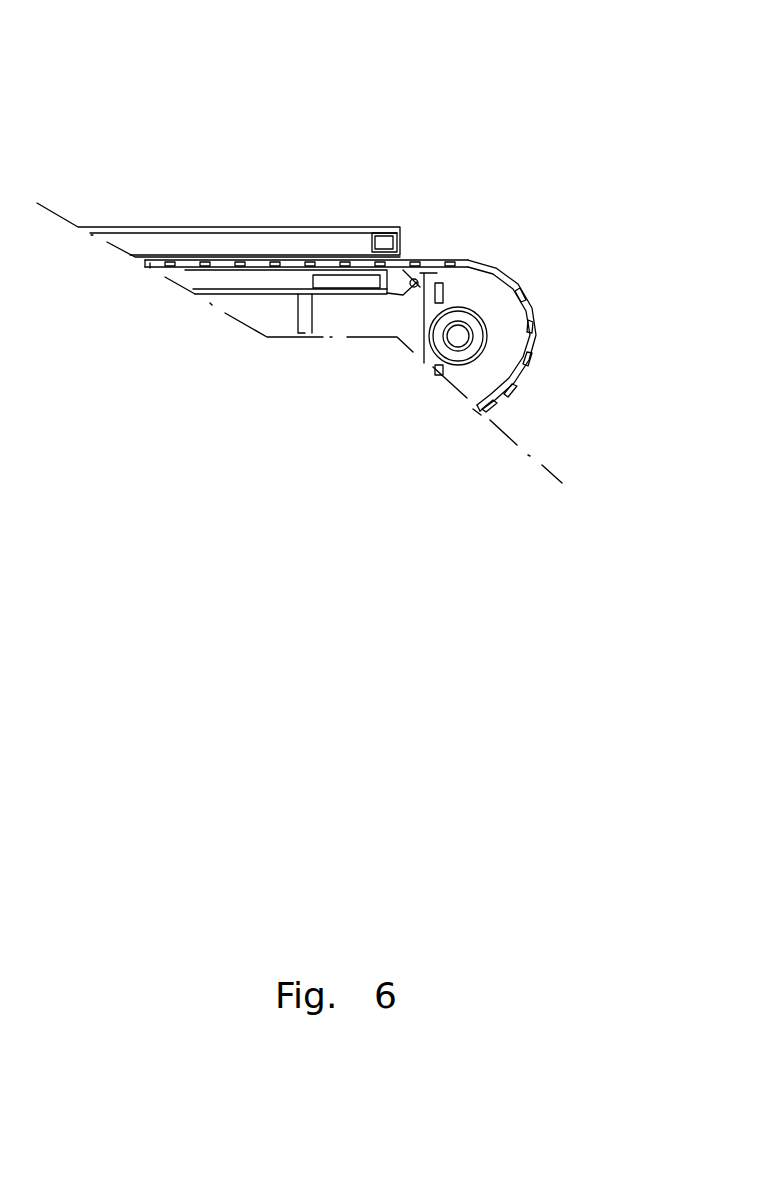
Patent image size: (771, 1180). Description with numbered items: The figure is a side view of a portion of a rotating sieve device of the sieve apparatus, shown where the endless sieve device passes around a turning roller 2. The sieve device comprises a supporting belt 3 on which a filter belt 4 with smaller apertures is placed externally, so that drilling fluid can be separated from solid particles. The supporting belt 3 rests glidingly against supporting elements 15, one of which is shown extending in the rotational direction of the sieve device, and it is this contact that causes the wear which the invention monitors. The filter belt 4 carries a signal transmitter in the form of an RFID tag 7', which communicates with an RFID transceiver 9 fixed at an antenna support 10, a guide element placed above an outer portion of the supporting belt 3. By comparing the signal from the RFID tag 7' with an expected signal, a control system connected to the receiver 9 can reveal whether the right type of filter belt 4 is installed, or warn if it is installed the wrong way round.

The antenna support 10 is at (335, 227).
The RFID transceiver 9 is at (402, 233).
The turning roller 2 is at (430, 283).
The supporting belt 3 is at (505, 272).
The filter belt 4 is at (530, 305).
The RFID tag 7' is at (588, 374).
The supporting element 15 is at (245, 262).